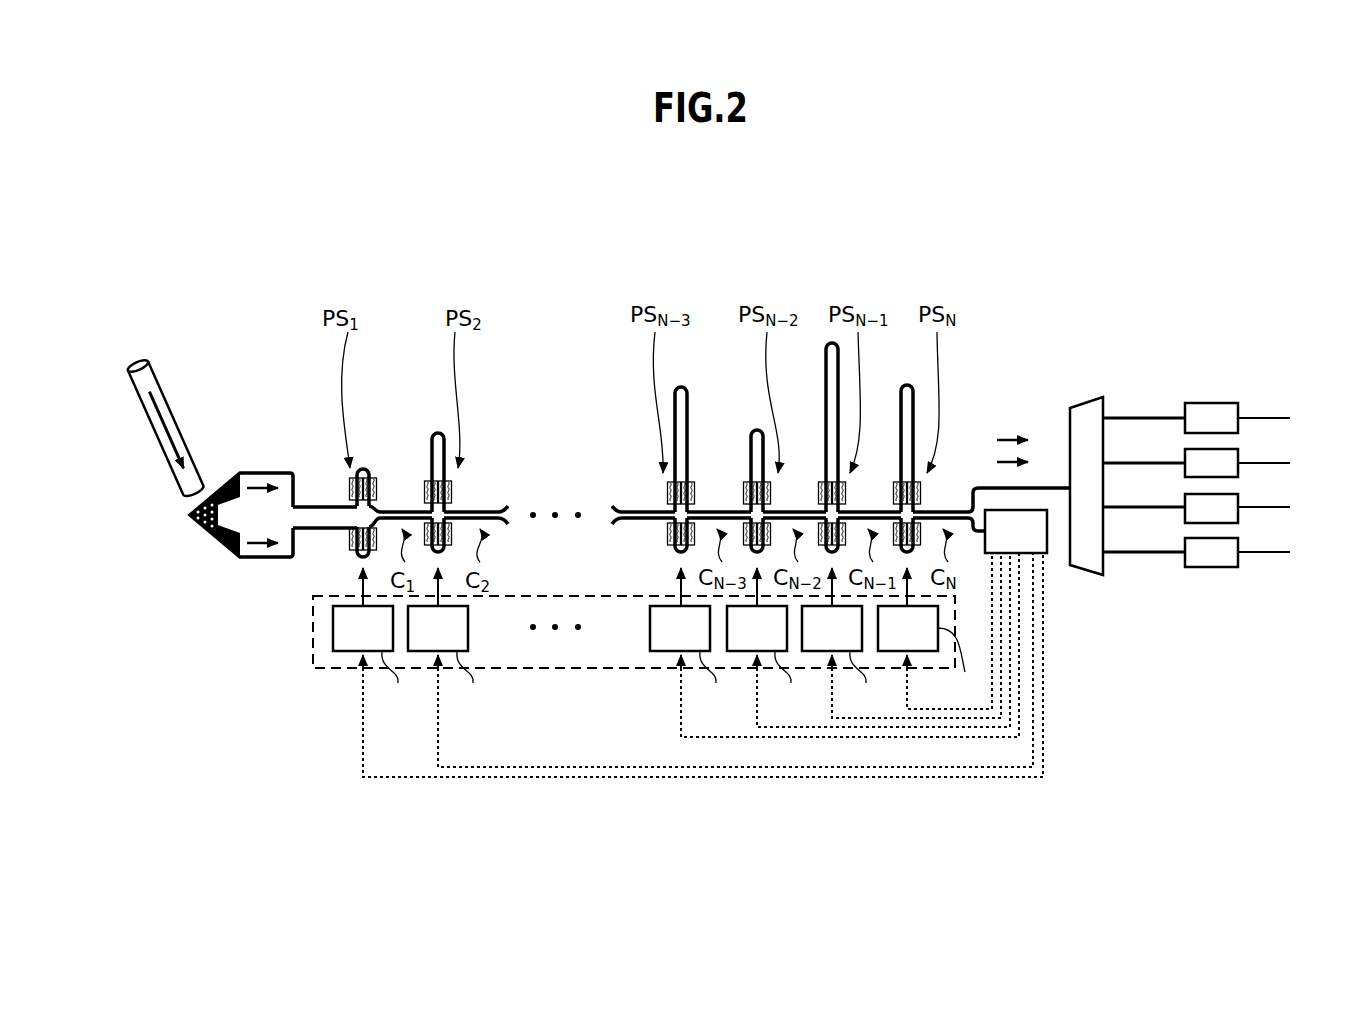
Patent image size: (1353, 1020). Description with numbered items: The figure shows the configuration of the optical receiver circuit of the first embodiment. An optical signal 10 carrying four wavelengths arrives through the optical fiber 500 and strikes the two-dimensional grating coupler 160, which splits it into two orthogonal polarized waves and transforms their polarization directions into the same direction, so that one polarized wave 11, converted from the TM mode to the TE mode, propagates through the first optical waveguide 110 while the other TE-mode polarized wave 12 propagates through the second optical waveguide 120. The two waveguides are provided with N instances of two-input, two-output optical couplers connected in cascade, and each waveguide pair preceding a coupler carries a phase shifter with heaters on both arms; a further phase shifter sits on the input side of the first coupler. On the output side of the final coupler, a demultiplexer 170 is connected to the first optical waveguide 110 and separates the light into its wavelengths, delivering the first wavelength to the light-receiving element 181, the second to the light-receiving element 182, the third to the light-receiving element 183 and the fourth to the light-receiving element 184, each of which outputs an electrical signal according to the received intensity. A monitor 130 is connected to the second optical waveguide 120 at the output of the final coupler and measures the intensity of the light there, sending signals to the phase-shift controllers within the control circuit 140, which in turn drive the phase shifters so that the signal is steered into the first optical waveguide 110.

The optical signal 10 is at (172, 412).
The polarized wave 11 is at (253, 486).
The polarized wave 12 is at (254, 546).
The first optical waveguide 110 is at (283, 472).
The second optical waveguide 120 is at (283, 559).
The monitor 130 is at (1048, 532).
The control circuit 140 is at (322, 670).
The two-dimensional grating coupler 160 is at (180, 524).
The demultiplexer 170 is at (1086, 406).
The light-receiving element 181 is at (1210, 403).
The light-receiving element 182 is at (1240, 456).
The light-receiving element 183 is at (1240, 518).
The light-receiving element 184 is at (1210, 568).
The optical fiber 500 is at (143, 362).